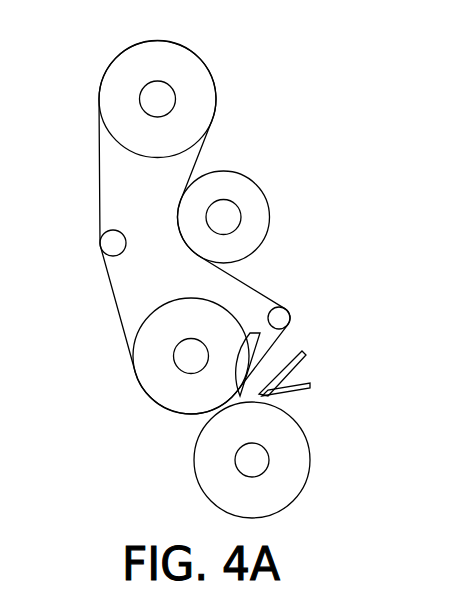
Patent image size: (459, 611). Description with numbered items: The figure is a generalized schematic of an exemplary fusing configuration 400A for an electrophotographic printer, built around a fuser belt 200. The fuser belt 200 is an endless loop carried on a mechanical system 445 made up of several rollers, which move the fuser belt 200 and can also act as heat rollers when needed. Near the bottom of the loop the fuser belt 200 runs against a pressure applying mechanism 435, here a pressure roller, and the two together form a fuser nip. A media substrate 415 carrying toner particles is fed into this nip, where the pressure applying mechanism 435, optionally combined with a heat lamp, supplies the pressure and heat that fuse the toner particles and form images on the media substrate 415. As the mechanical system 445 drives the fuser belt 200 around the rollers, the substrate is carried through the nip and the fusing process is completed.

The fusing configuration 400A is at (273, 52).
The mechanical system 445 is at (223, 136).
The fuser belt 200 is at (118, 310).
The media substrate 415 is at (202, 422).
The pressure applying mechanism 435 is at (310, 460).